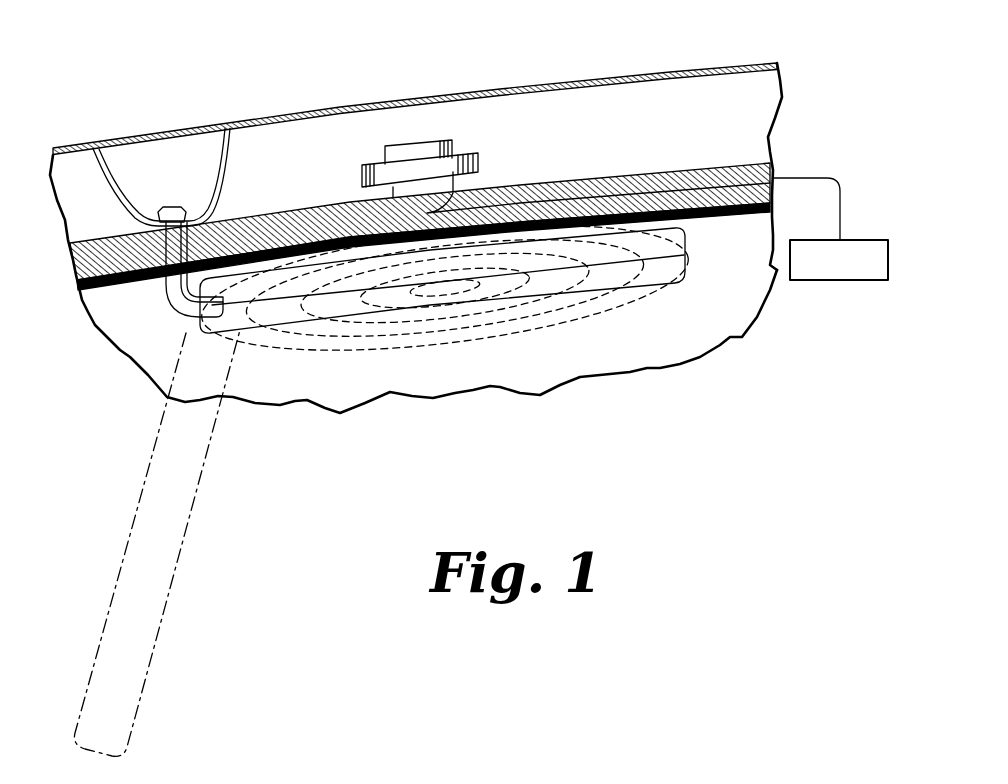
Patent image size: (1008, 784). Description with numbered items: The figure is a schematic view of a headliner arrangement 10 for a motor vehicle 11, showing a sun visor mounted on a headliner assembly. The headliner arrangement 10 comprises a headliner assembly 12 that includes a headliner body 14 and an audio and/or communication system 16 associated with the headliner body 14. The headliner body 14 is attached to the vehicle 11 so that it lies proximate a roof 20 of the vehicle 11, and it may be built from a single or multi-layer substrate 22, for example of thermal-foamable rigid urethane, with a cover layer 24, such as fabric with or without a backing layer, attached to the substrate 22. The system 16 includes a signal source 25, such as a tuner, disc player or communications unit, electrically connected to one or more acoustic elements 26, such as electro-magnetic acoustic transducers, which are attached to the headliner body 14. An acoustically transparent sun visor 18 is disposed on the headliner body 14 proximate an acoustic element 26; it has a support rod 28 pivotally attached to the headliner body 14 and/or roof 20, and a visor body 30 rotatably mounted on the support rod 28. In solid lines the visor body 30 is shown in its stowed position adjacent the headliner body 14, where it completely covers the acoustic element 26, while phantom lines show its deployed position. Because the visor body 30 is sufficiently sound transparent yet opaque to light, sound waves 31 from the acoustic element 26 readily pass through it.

The headliner arrangement 10 is at (190, 328).
The motor vehicle 11 is at (166, 64).
The headliner assembly 12 is at (711, 142).
The headliner body 14 is at (742, 160).
The audio and/or communication system 16 is at (418, 116).
The sun visor 18 is at (617, 285).
The roof 20 is at (568, 94).
The substrate 22 is at (773, 172).
The cover layer 24 is at (690, 218).
The signal source 25 is at (830, 281).
The acoustic element 26 is at (420, 140).
The support rod 28 is at (170, 308).
The visor body 30 is at (198, 497).
The sound waves 31 is at (478, 333).